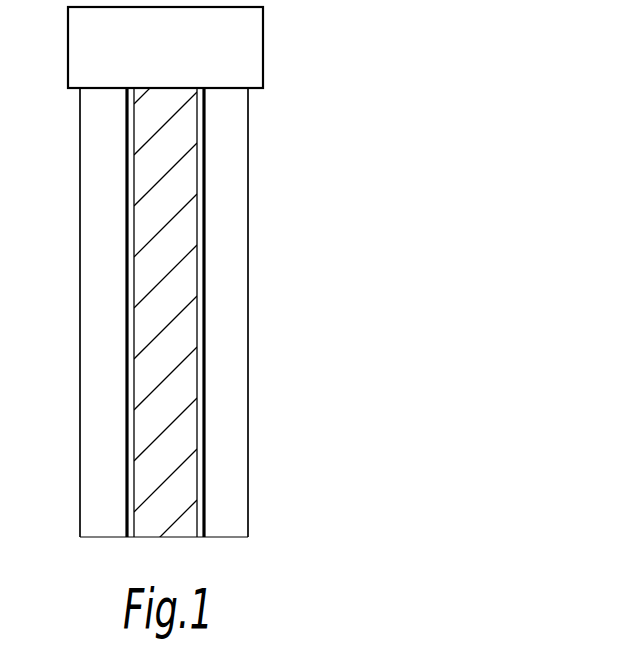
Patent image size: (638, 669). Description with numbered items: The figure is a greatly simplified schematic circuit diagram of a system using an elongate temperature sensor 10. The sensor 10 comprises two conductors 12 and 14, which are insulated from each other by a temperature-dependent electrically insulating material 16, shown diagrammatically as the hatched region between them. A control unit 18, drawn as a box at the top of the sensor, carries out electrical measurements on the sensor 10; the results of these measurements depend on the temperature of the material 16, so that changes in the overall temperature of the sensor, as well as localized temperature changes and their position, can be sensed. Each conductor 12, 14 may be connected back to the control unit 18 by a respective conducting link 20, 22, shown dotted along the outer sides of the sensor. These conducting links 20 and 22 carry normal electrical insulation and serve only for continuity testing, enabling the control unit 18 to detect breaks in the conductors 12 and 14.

The elongate temperature sensor 10 is at (265, 268).
The conductor 12 is at (205, 504).
The conductor 14 is at (125, 337).
The temperature-dependent electrically insulating material 16 is at (182, 530).
The control unit 18 is at (263, 33).
The conducting link 20 is at (248, 478).
The conducting link 22 is at (80, 475).